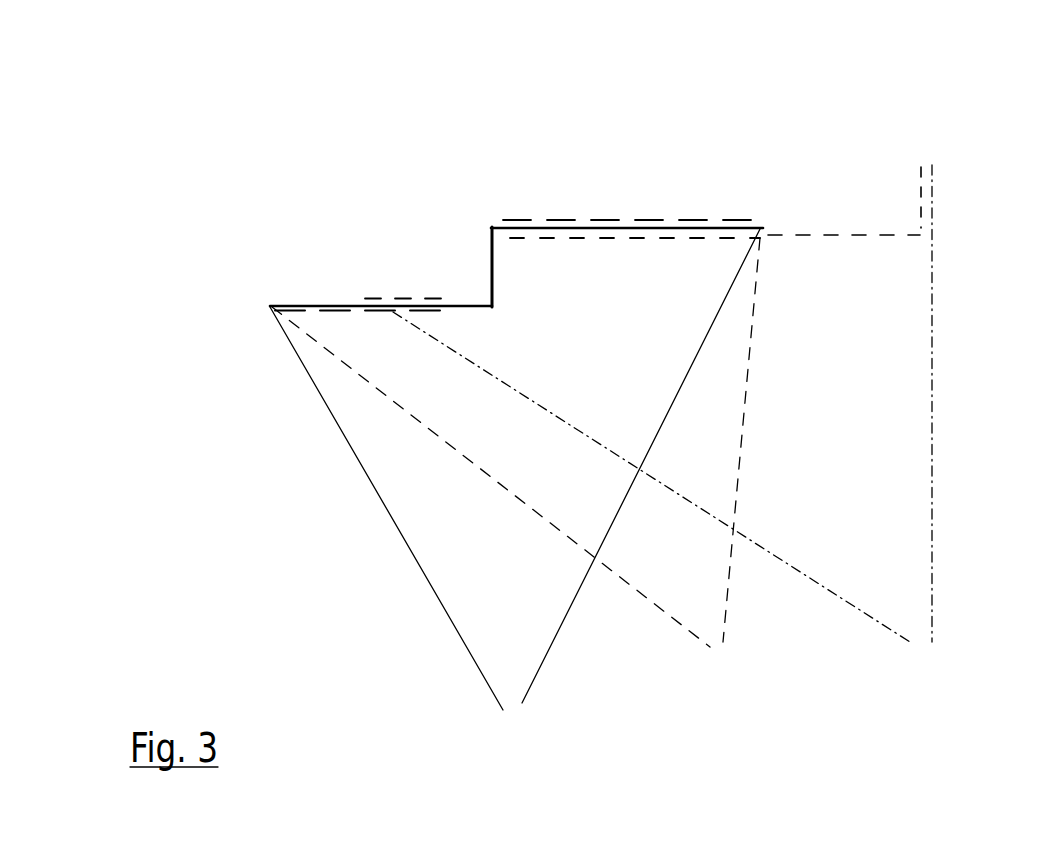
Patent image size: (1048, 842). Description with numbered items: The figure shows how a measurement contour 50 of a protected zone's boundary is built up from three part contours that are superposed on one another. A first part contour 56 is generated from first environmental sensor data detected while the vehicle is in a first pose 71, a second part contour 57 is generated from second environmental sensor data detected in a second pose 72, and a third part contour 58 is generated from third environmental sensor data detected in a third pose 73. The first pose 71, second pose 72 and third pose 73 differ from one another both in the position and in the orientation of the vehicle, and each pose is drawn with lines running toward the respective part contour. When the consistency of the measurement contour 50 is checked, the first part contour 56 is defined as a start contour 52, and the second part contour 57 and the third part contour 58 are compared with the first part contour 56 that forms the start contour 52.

The measurement contour 50 is at (820, 147).
The start contour 52 is at (381, 269).
The first part contour 56 is at (291, 306).
The second part contour 57 is at (683, 220).
The third part contour 58 is at (921, 222).
The first pose 71 is at (511, 709).
The second pose 72 is at (715, 649).
The third pose 73 is at (922, 643).